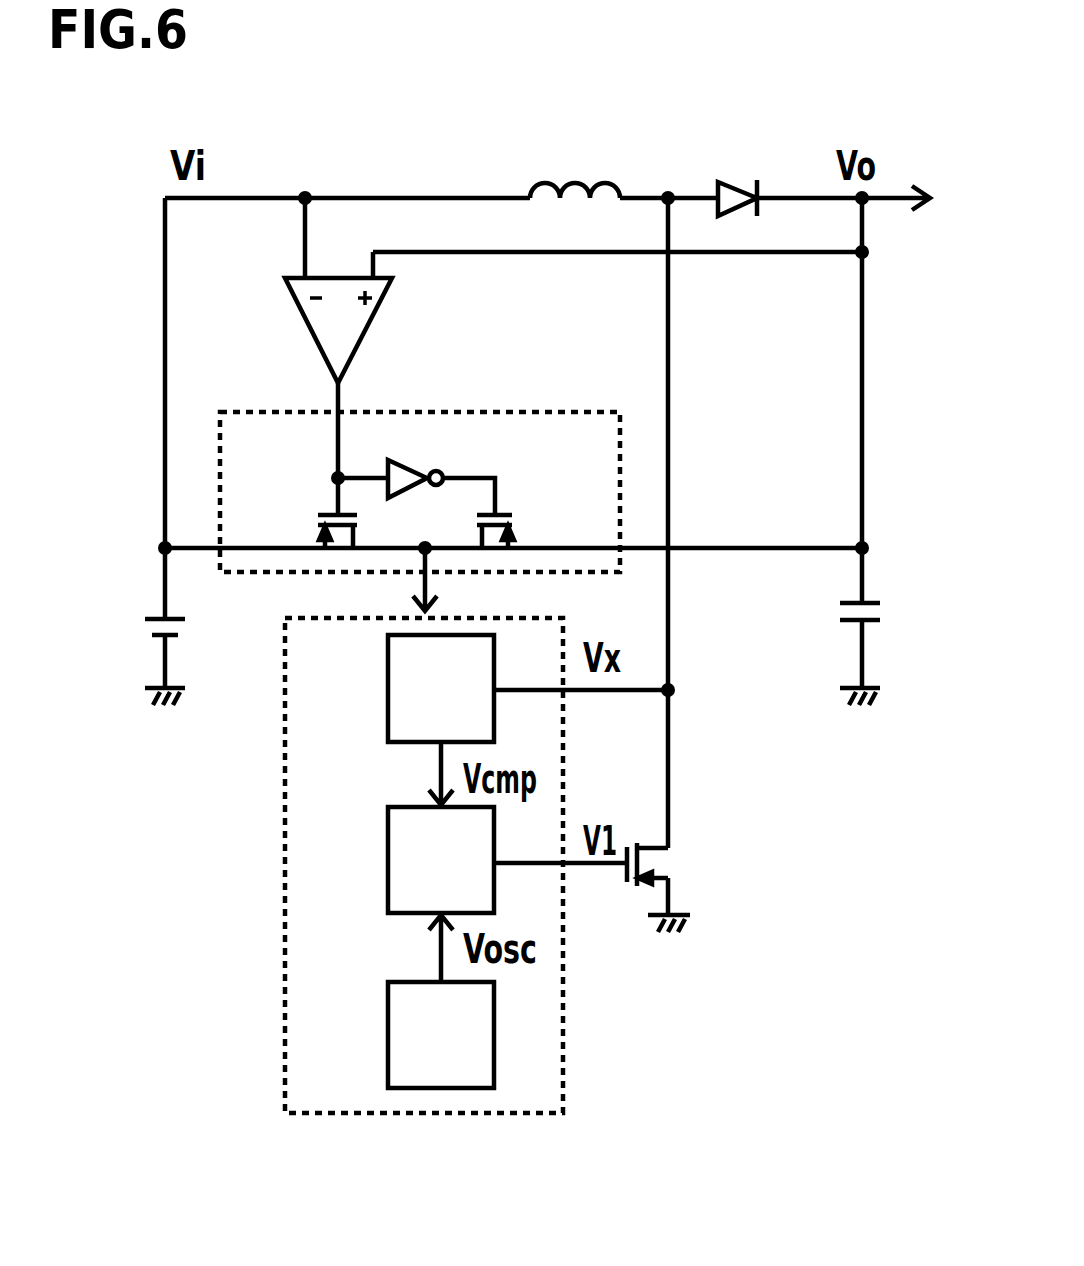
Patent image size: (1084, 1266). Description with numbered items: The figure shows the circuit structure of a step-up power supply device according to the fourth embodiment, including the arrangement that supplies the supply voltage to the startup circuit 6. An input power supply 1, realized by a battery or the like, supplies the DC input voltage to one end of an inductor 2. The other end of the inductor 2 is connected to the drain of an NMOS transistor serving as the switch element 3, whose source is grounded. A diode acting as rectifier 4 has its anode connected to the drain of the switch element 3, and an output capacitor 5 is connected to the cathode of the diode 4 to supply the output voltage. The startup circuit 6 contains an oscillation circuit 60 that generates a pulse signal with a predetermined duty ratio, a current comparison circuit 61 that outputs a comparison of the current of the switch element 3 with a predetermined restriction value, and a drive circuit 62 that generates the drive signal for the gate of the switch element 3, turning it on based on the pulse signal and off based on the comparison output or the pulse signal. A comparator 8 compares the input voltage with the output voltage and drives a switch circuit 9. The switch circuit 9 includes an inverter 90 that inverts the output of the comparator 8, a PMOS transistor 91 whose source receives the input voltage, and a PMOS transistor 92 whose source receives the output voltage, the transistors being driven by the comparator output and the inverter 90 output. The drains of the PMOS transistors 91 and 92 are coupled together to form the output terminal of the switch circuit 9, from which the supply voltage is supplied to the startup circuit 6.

The input power supply 1 is at (143, 628).
The inductor 2 is at (542, 185).
The NMOS transistor (switch element) 3 is at (675, 876).
The diode (rectifier) 4 is at (735, 182).
The output capacitor 5 is at (883, 611).
The startup circuit 6 is at (563, 985).
The comparator 8 is at (373, 325).
The switch circuit 9 is at (540, 400).
The inverter 90 is at (412, 464).
The PMOS transistor 91 is at (316, 518).
The PMOS transistor 92 is at (518, 518).
The oscillation circuit 60 is at (386, 1025).
The current comparison circuit 61 is at (386, 700).
The drive circuit 62 is at (386, 866).